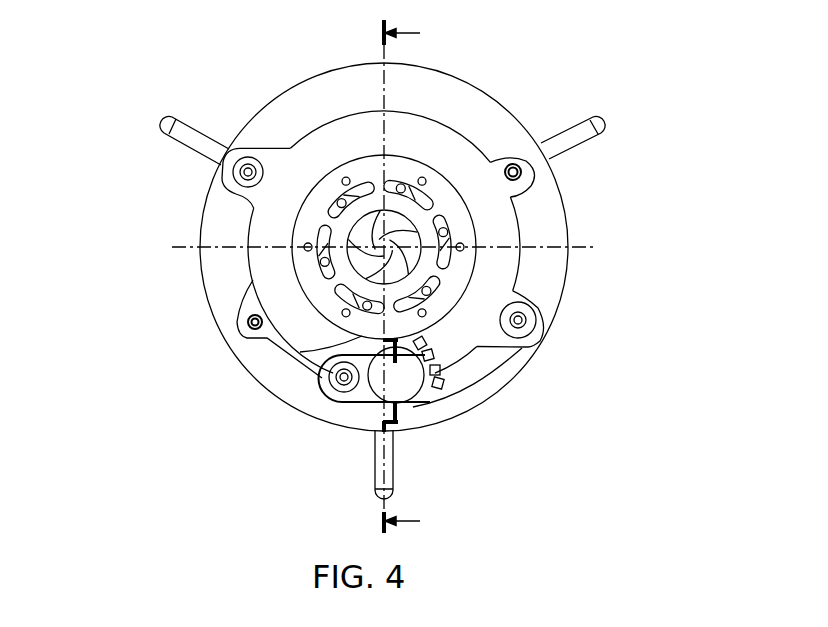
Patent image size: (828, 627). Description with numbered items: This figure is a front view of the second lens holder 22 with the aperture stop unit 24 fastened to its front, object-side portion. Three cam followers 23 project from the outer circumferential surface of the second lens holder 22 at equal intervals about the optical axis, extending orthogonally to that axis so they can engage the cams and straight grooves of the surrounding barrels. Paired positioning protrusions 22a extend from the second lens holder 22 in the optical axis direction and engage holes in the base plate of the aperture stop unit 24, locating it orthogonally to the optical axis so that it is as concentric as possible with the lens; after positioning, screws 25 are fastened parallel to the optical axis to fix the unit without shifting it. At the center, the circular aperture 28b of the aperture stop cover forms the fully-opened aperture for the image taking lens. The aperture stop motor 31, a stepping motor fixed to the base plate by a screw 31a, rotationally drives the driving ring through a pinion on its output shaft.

The second lens holder 22 is at (498, 103).
The positioning protrusions 22a is at (495, 163).
The cam followers 23 is at (205, 138).
The aperture stop unit 24 is at (511, 232).
The screws 25 is at (247, 180).
The circular aperture 28b is at (388, 212).
The aperture stop motor 31 is at (412, 392).
The screw 31a is at (333, 378).